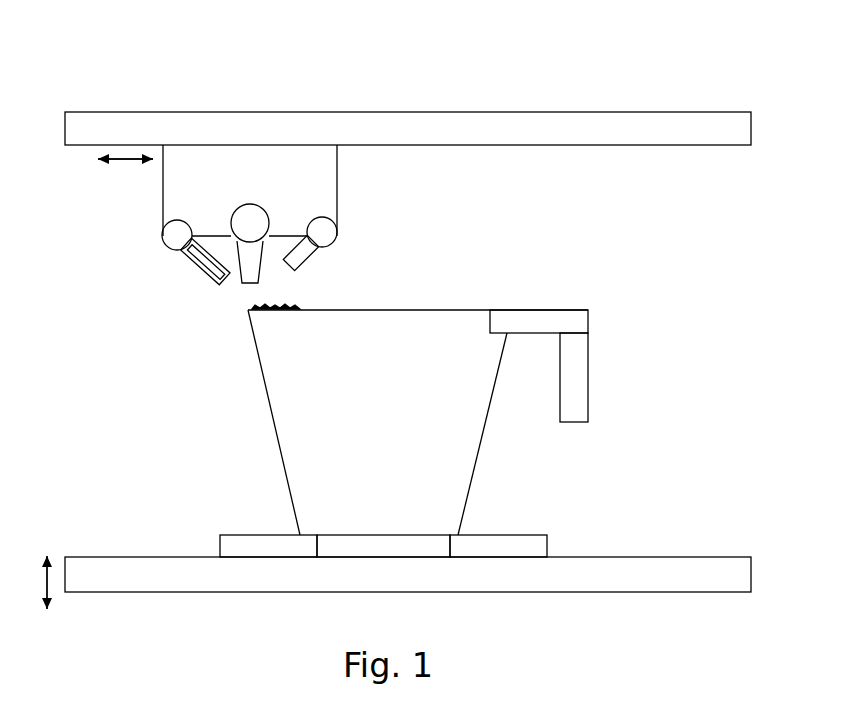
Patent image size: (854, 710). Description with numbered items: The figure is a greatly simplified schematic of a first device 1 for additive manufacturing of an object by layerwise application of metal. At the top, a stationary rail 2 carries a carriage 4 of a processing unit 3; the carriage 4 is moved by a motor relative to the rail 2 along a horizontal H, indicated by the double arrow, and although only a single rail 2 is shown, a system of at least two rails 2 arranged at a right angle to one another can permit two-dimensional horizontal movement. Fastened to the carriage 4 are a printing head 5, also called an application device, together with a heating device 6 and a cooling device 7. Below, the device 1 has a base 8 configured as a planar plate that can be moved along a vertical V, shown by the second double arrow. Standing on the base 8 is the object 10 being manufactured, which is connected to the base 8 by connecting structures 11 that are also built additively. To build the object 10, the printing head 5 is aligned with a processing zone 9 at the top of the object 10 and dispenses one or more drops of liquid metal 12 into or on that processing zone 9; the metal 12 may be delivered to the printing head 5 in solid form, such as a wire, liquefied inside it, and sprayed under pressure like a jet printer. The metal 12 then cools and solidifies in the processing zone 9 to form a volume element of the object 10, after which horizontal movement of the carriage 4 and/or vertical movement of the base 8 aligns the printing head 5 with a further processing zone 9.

The first device 1 is at (735, 85).
The stationary rail 2 is at (133, 110).
The processing unit 3 is at (365, 212).
The carriage 4 is at (256, 191).
The printing head 5 is at (236, 247).
The heating device 6 is at (312, 255).
The cooling device 7 is at (194, 264).
The base 8 is at (380, 586).
The processing zone 9 is at (244, 308).
The object 10 is at (392, 431).
The connecting structures 11 is at (248, 535).
The metal 12 is at (286, 297).